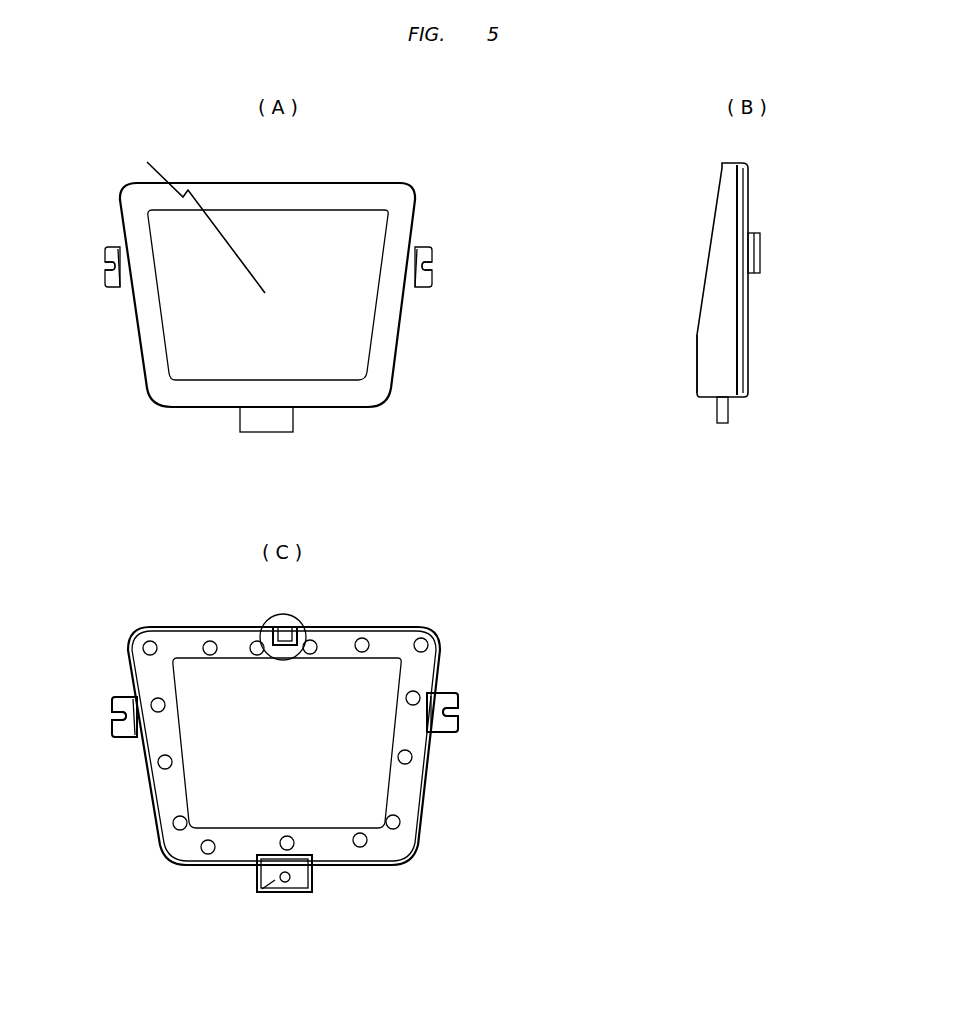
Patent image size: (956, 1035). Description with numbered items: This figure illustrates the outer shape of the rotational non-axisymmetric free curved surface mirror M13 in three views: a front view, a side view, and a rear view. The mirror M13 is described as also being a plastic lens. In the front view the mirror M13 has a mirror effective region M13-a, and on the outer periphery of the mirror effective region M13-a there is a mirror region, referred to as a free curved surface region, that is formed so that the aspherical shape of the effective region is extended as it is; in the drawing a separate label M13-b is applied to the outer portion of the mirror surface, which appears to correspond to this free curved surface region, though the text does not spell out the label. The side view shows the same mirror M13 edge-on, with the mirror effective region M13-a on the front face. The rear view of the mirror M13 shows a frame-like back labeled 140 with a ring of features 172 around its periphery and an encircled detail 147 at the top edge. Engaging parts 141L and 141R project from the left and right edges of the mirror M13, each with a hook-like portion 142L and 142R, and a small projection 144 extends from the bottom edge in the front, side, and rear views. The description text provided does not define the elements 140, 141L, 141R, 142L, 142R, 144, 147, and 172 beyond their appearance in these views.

The rotational non-axisymmetric free curved surface mirror M13 is at (674, 376).
The mirror effective region M13-a is at (406, 212).
The second surface of panel M13-b is at (484, 269).
The frame 140 is at (290, 721).
The left engaging portion 141L is at (286, 464).
The right engaging portion 141R is at (446, 463).
The left hook 142L is at (294, 505).
The right hook 142R is at (456, 509).
The projection 144 is at (502, 648).
The slot 147 is at (312, 619).
The hole 172 is at (324, 727).